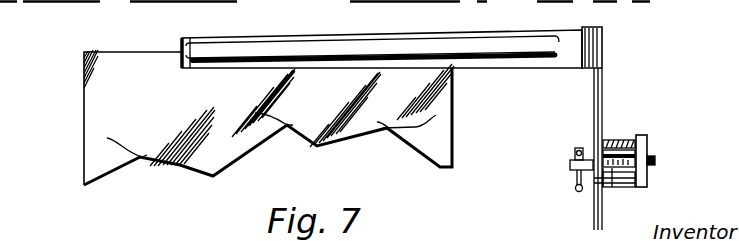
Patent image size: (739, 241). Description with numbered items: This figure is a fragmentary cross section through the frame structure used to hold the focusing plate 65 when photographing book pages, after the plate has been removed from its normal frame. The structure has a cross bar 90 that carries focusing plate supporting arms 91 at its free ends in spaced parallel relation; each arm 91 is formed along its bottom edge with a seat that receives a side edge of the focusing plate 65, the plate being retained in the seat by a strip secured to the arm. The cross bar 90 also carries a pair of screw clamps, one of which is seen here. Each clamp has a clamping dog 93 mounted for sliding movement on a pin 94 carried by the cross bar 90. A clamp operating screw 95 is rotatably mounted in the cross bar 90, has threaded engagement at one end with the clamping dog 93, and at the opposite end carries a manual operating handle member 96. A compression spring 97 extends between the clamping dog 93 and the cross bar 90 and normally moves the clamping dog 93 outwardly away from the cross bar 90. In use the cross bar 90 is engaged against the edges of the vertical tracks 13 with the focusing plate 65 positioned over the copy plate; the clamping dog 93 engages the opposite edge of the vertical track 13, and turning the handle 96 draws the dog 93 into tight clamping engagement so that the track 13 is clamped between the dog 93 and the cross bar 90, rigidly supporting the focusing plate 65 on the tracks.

The focusing plate 65 is at (102, 103).
The focusing plate supporting arm 91 is at (527, 60).
The cross bar 90 is at (597, 90).
The vertical track 13 is at (610, 143).
The clamping dog 93 is at (642, 142).
The clamp operating screw 95 is at (652, 158).
The manual operating handle member 96 is at (570, 164).
The compression spring 97 is at (613, 172).
The pin 94 is at (627, 172).